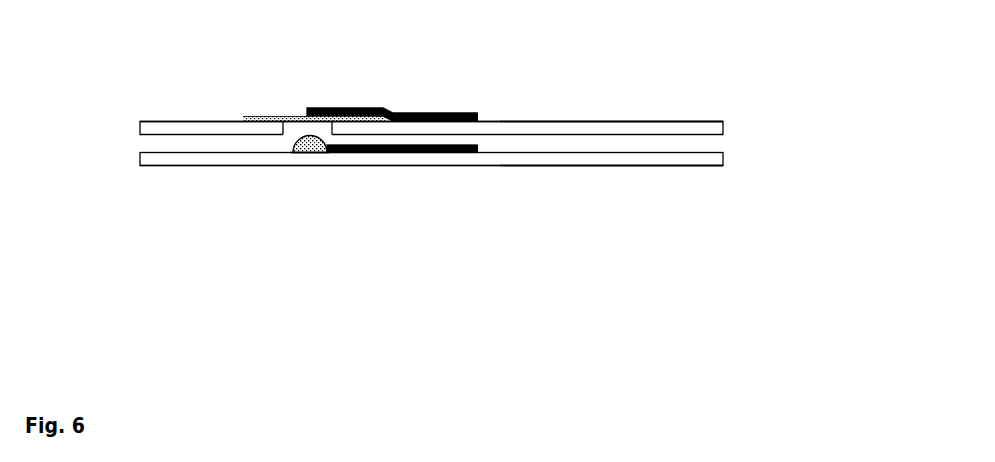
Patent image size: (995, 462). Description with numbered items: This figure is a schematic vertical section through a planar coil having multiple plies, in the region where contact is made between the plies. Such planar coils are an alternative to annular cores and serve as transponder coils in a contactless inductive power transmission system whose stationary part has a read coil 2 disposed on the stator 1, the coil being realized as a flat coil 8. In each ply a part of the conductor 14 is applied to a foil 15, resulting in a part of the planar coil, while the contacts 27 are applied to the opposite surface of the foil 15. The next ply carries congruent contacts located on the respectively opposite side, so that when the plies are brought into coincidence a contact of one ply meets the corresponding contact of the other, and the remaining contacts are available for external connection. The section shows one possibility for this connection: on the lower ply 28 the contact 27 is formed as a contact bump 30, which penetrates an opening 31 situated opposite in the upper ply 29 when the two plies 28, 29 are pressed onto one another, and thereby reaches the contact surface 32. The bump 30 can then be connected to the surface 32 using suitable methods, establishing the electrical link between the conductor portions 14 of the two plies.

The stator 1 is at (412, 107).
The read coil 2 is at (412, 169).
The flat coil 8 is at (485, 128).
The conductor 14 is at (424, 105).
The foil 15 is at (630, 112).
The contact 27 is at (326, 134).
The lower ply 28 is at (731, 174).
The upper ply 29 is at (731, 112).
The contact bump 30 is at (288, 166).
The opening 31 is at (277, 138).
The contact surface 32 is at (236, 106).